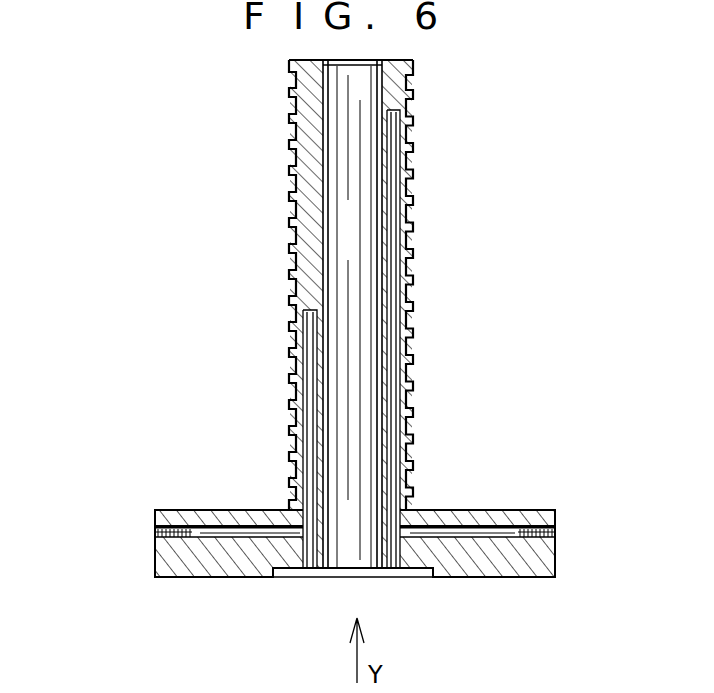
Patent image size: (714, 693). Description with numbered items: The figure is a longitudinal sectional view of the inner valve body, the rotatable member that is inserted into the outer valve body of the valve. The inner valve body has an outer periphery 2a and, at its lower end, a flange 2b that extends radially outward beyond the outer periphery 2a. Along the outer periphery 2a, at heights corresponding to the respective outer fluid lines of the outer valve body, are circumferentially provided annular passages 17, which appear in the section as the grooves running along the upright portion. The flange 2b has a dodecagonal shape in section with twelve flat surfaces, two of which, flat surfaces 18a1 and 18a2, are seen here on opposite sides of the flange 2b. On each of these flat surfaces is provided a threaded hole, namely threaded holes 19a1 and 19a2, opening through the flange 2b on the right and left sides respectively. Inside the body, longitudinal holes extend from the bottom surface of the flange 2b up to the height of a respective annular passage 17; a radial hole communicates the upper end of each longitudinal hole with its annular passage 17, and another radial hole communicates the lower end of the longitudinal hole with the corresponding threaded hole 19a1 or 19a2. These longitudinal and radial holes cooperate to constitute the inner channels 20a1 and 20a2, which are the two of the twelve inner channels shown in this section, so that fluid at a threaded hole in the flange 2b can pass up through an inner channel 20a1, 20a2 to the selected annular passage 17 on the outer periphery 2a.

The outer periphery 2a is at (415, 80).
The flange 2b is at (532, 510).
The annular passages 17 is at (290, 147).
The flat surface 18a1 is at (555, 518).
The flat surface 18a2 is at (155, 522).
The threaded hole 19a1 is at (555, 533).
The threaded hole 19a2 is at (155, 535).
The inner channel 20a1 is at (489, 510).
The inner channel 20a2 is at (266, 506).